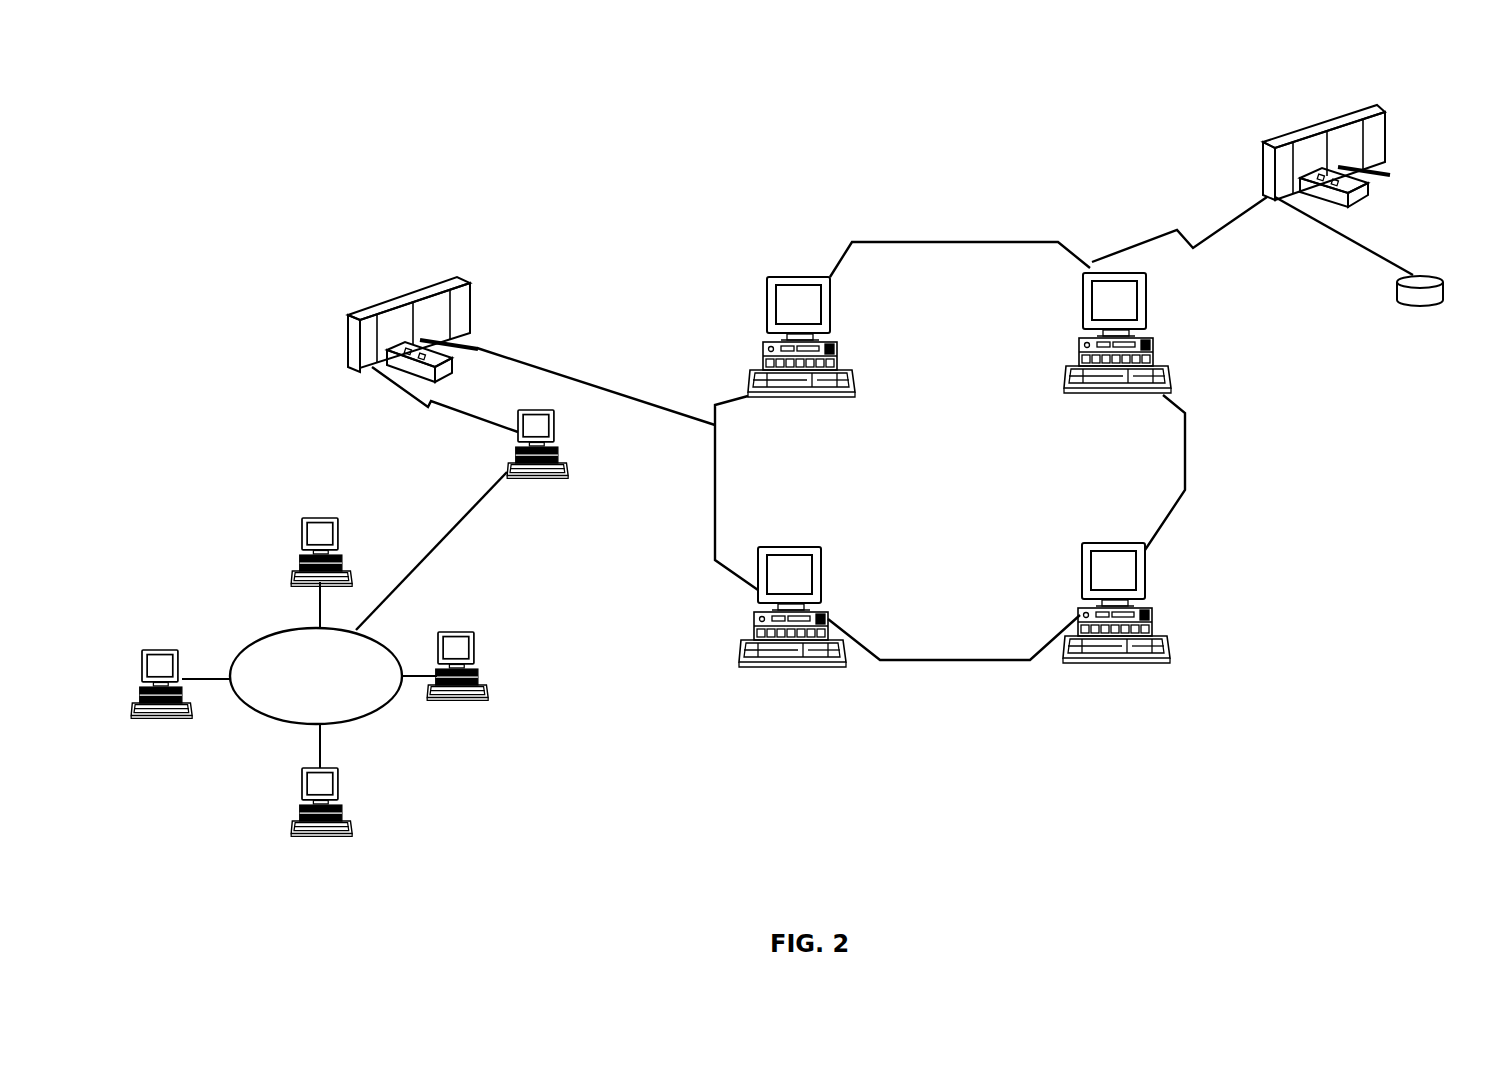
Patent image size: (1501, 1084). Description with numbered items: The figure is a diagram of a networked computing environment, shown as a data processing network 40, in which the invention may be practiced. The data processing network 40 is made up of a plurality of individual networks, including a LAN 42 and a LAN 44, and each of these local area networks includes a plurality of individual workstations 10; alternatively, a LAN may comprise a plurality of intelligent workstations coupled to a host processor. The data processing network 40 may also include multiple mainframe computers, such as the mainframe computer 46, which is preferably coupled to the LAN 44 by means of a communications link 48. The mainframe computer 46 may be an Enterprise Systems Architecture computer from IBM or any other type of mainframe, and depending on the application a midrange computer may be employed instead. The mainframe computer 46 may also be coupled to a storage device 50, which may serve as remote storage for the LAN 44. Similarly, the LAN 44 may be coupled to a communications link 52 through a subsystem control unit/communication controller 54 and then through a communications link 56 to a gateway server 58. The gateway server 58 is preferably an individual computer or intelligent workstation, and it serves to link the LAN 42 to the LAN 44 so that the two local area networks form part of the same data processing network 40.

The workstation 10 is at (785, 275).
The data processing network 40 is at (968, 228).
The LAN 42 is at (344, 620).
The LAN 44 is at (950, 464).
The mainframe computer 46 is at (1333, 123).
The communications link 48 is at (1177, 230).
The storage device 50 is at (1433, 275).
The communications link 52 is at (592, 388).
The subsystem control unit/communication controller 54 is at (468, 281).
The communications link 56 is at (387, 377).
The gateway server 58 is at (530, 411).